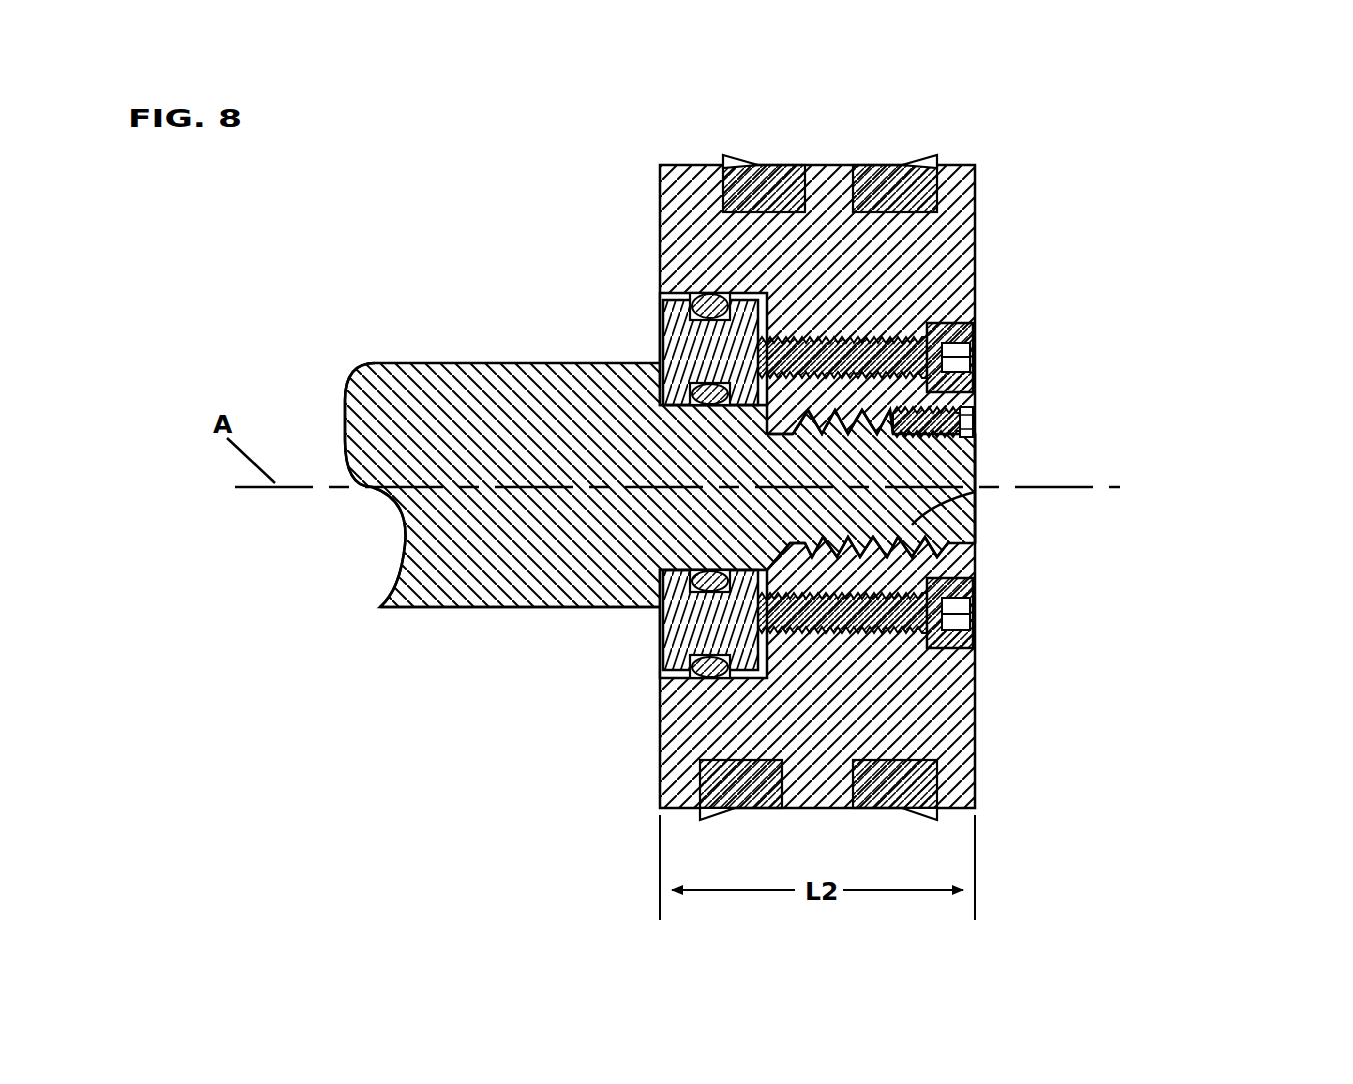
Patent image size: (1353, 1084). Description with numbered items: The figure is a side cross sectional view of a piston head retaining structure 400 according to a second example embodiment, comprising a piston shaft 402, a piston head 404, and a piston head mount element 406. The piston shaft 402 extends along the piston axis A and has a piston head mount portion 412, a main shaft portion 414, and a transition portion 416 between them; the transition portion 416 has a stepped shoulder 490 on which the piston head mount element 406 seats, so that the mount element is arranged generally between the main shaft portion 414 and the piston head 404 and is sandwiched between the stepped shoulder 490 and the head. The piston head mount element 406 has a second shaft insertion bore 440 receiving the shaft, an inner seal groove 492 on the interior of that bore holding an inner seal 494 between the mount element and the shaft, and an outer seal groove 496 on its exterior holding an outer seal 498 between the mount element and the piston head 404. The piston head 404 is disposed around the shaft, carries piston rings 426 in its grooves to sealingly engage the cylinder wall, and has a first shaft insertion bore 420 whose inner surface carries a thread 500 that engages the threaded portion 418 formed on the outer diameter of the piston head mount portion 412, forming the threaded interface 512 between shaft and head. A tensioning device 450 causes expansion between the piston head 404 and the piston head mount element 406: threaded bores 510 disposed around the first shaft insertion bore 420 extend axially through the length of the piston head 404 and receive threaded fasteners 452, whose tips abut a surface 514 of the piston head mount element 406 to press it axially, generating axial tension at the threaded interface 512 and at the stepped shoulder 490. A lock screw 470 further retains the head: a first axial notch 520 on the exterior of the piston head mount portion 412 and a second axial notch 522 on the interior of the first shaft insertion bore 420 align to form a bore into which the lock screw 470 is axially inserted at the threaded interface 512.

The piston head retaining structure 400 is at (358, 222).
The piston shaft 402 is at (719, 494).
The piston head 404 is at (888, 447).
The piston head mount element 406 is at (650, 476).
The piston head mount portion 412 is at (962, 464).
The main shaft portion 414 is at (425, 592).
The transition portion 416 is at (683, 548).
The threaded portion 418 is at (940, 536).
The first shaft insertion bore 420 is at (790, 437).
The piston ring 426 is at (762, 165).
The second shaft insertion bore 440 is at (688, 405).
The tensioning device 450 is at (988, 387).
The threaded fastener 452 is at (967, 366).
The lock screw 470 is at (1004, 408).
The stepped shoulder 490 is at (660, 383).
The inner seal groove 492 is at (700, 603).
The inner seal 494 is at (690, 386).
The outer seal groove 496 is at (700, 680).
The outer seal 498 is at (705, 305).
The thread 500 is at (975, 550).
The threaded bore 510 is at (945, 352).
The threaded interface 512 is at (975, 492).
The surface 514 is at (757, 325).
The first axial notch 520 is at (978, 432).
The second axial notch 522 is at (975, 408).